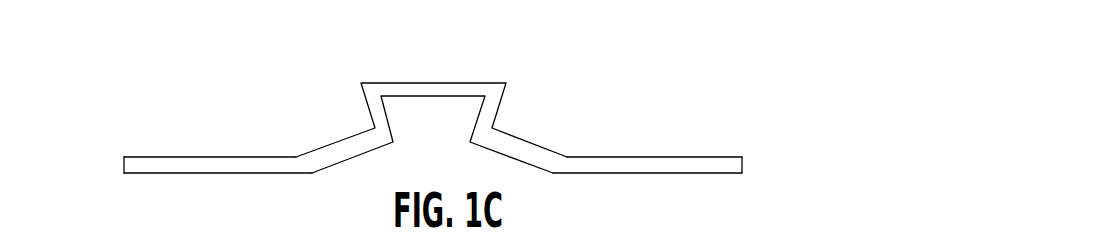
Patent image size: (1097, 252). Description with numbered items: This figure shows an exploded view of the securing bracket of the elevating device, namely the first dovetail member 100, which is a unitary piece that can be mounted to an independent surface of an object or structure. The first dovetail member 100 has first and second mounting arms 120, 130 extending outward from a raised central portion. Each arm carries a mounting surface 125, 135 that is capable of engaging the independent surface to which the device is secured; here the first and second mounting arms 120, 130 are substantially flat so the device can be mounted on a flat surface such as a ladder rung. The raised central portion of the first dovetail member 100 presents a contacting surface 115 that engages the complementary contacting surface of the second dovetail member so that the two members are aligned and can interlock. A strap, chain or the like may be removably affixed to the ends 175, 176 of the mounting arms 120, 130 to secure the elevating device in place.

The first dovetail member 100 is at (687, 79).
The contacting surface 115 is at (419, 82).
The first mounting arm 120 is at (183, 165).
The mounting surface 125 is at (242, 173).
The second mounting arm 130 is at (602, 165).
The mounting surface 135 is at (688, 173).
The end of mounting arm 175 is at (124, 166).
The end of mounting arm 176 is at (742, 164).